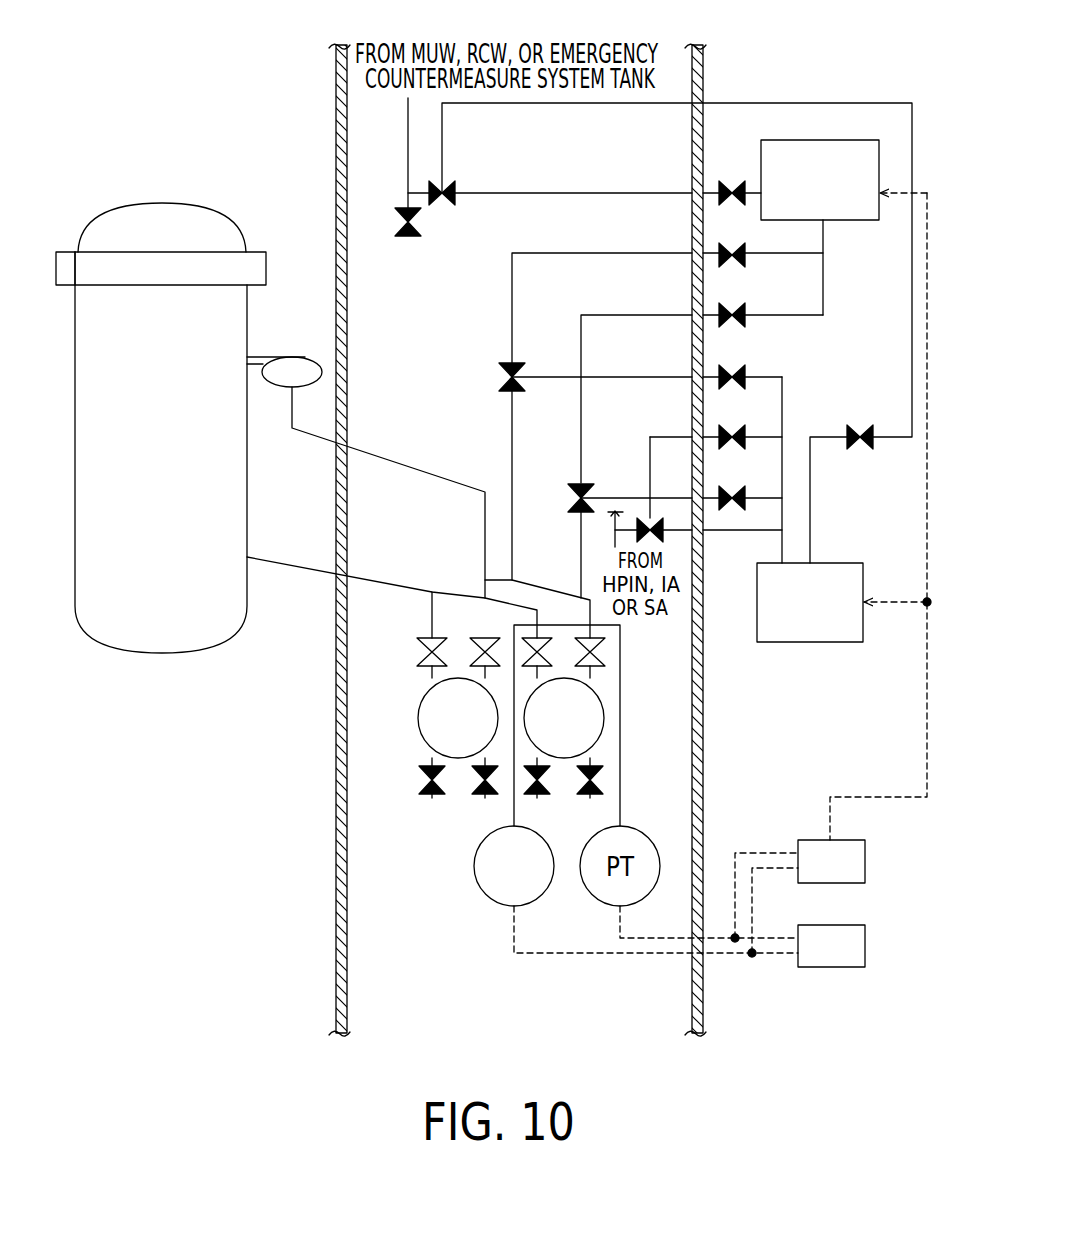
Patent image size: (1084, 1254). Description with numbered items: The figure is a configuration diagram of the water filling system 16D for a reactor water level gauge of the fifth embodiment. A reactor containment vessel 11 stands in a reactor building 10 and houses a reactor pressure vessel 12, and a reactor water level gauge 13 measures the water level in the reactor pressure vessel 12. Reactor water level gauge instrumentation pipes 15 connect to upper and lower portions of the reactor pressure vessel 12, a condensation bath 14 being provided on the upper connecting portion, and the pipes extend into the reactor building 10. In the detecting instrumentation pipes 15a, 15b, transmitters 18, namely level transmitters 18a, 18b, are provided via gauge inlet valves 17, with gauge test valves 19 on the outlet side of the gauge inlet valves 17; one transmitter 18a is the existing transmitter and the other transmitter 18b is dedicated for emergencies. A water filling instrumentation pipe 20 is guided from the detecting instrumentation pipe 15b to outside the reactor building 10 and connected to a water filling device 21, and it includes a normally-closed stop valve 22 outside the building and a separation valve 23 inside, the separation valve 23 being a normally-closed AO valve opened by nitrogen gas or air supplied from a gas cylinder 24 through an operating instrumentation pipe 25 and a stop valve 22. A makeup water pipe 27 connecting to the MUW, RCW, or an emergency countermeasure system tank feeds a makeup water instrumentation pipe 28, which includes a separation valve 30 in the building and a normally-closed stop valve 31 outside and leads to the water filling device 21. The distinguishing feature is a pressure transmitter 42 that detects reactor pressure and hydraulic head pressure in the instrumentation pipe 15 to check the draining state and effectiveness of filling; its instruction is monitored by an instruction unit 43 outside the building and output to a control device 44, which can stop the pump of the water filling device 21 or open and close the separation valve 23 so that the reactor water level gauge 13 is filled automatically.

The reactor building 10 is at (703, 66).
The reactor containment vessel 11 is at (336, 66).
The reactor pressure vessel 12 is at (217, 215).
The reactor water level gauge 13 is at (312, 357).
The condensation bath 14 is at (283, 356).
The reactor water level gauge instrumentation pipe 15 is at (400, 462).
The detecting instrumentation pipe 15a is at (485, 578).
The detecting instrumentation pipe 15b is at (447, 591).
The water filling system for a reactor water level gauge 16D is at (790, 101).
The gauge inlet valve 17 is at (606, 652).
The transmitter 18 is at (608, 704).
The existing transmitter 18a is at (601, 730).
The dedicated transmitter 18b is at (420, 712).
The gauge test valve 19 is at (606, 780).
The water filling instrumentation pipe 20 is at (622, 252).
The water filling device 21 is at (835, 140).
The stop valve 22 is at (732, 243).
The separation valve 23 is at (516, 362).
The gas cylinder 24 is at (828, 562).
The operating instrumentation pipe 25 is at (624, 376).
The makeup water pipe 27 is at (408, 148).
The makeup water instrumentation pipe 28 is at (622, 192).
The separation valve 30 is at (456, 185).
The stop valve 31 is at (732, 181).
The transmitter 42 is at (472, 866).
The instruction unit 43 is at (840, 925).
The control device 44 is at (840, 840).